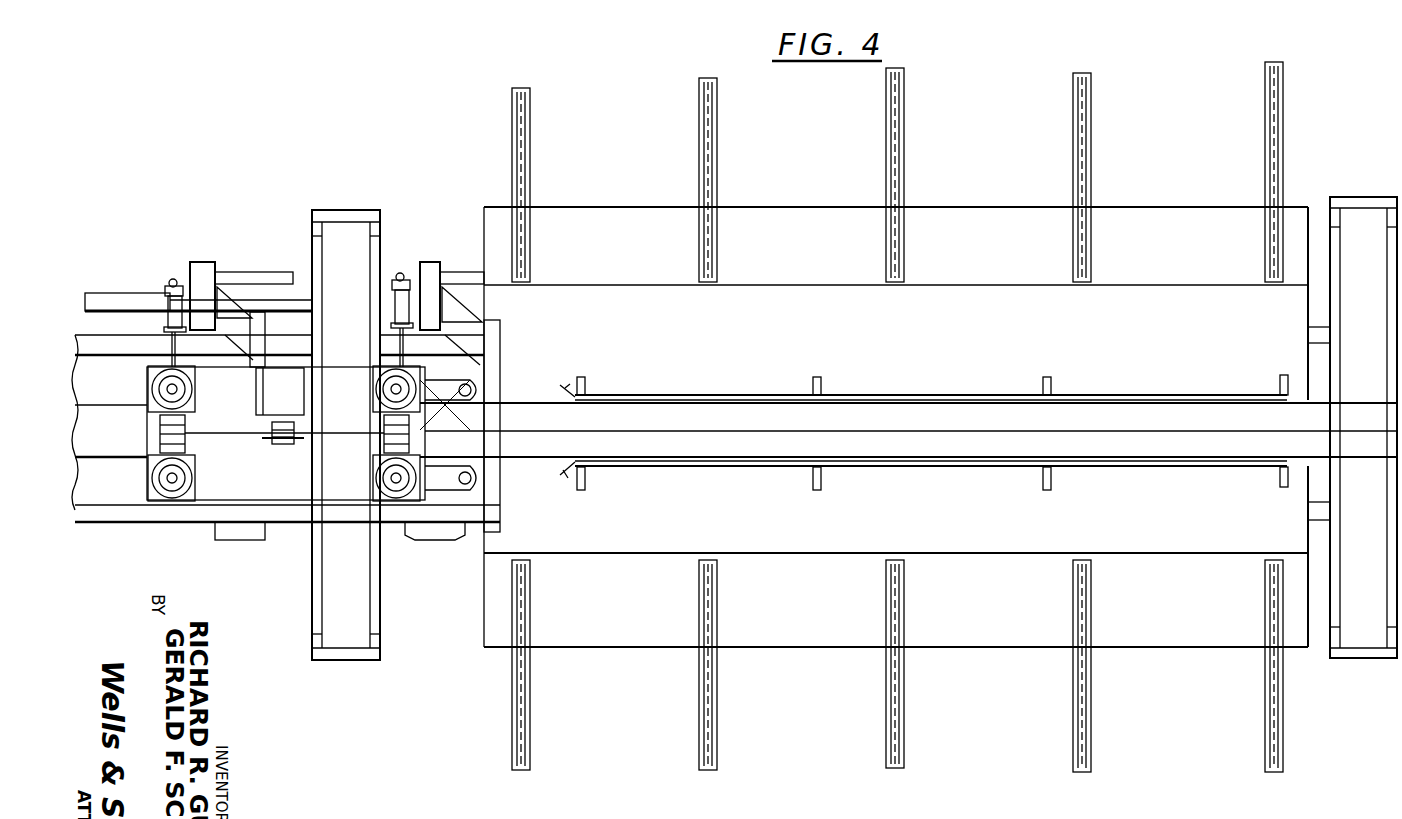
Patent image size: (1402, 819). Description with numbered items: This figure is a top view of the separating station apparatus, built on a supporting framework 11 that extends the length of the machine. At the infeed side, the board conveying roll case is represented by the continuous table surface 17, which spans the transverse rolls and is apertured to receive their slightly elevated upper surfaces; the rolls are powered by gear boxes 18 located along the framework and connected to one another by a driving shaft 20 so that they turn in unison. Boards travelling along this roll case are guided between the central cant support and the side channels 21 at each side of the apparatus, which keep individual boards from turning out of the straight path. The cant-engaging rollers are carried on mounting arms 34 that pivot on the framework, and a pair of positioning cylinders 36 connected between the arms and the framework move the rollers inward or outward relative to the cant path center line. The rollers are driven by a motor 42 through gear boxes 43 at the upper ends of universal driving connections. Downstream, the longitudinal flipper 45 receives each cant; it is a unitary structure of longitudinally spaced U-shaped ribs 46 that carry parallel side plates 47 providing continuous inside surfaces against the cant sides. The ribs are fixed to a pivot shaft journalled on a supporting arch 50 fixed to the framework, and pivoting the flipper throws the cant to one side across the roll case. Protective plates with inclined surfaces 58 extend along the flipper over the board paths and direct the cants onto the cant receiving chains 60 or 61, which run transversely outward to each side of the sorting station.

The supporting framework 11 is at (406, 524).
The table surface 17 is at (122, 500).
The gear boxes 18 is at (272, 314).
The driving shaft 20 is at (100, 296).
The side channels 21 is at (133, 343).
The mounting arms 34 is at (455, 400).
The positioning cylinders 36 is at (172, 297).
The motor 42 is at (304, 402).
The gear boxes 43 is at (192, 405).
The longitudinal flipper 45 is at (898, 386).
The U-shaped ribs 46 is at (583, 379).
The side plates 47 is at (678, 468).
The supporting arch 50 is at (544, 392).
The inclined surfaces 58 is at (892, 344).
The cant receiving chains 60 is at (905, 130).
The cant receiving chains 61 is at (904, 732).